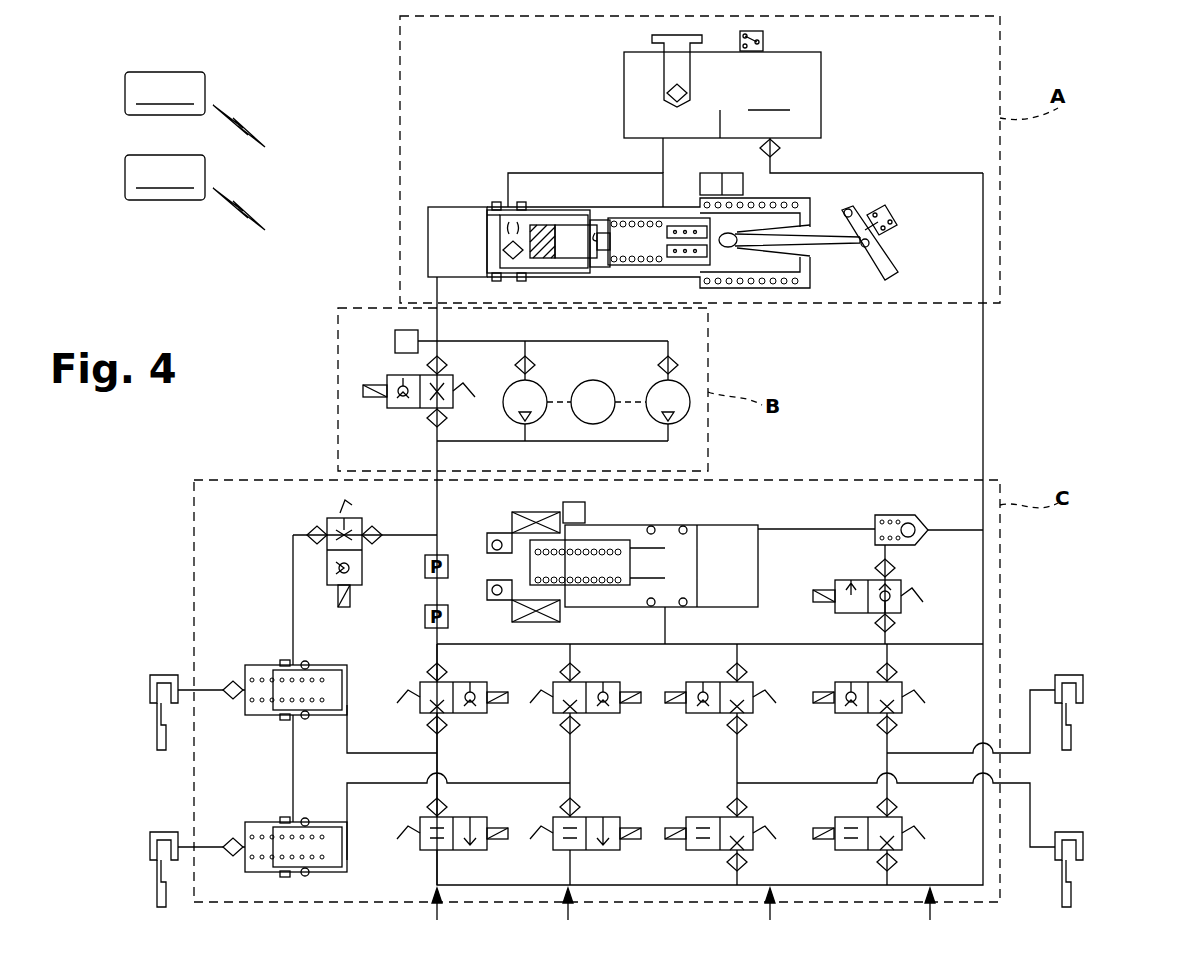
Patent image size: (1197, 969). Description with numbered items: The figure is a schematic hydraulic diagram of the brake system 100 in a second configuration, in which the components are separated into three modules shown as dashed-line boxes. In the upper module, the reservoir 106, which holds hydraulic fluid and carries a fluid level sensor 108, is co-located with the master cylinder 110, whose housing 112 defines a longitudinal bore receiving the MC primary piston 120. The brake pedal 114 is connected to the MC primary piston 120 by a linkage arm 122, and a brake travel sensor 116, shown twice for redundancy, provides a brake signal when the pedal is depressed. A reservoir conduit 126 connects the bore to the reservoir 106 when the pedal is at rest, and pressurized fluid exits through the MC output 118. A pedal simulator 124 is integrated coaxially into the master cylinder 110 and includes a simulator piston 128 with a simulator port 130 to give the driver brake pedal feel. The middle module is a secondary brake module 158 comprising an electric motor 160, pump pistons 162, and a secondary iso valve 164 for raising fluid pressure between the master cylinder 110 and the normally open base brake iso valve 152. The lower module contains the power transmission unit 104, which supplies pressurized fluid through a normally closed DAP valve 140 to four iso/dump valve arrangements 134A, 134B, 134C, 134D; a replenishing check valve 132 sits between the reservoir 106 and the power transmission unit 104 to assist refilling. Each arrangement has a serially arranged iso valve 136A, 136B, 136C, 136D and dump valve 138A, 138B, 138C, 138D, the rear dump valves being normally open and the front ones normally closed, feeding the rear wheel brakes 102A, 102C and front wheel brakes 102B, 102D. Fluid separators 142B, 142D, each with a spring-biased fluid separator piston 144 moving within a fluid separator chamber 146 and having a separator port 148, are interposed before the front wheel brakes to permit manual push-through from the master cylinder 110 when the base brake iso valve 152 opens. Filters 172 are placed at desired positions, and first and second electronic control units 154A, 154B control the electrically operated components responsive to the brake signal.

The brake system 100 is at (1098, 150).
The wheel brake 102A is at (1083, 690).
The wheel brake 102B is at (150, 690).
The wheel brake 102C is at (1083, 847).
The wheel brake 102D is at (150, 847).
The power transmission unit 104 is at (745, 523).
The reservoir 106 is at (722, 86).
The fluid level sensor 108 is at (758, 31).
The master cylinder 110 is at (800, 196).
The housing 112 is at (560, 210).
The brake pedal 114 is at (895, 245).
The brake travel sensor 116 is at (722, 173).
The MC output 118 is at (430, 288).
The MC primary piston 120 is at (718, 240).
The linkage arm 122 is at (832, 256).
The pedal simulator 124 is at (493, 196).
The reservoir conduit 126 is at (598, 172).
The simulator piston 128 is at (553, 256).
The simulator port 130 is at (490, 212).
The replenishing check valve 132 is at (905, 512).
The iso/dump valve arrangement 134A is at (930, 920).
The iso/dump valve arrangement 134B is at (437, 920).
The iso/dump valve arrangement 134C is at (770, 920).
The iso/dump valve arrangement 134D is at (568, 920).
The iso valve 136A is at (897, 680).
The iso valve 136B is at (460, 680).
The iso valve 136C is at (752, 680).
The iso valve 136D is at (605, 680).
The dump valve 138A is at (898, 808).
The dump valve 138B is at (462, 808).
The dump valve 138C is at (752, 808).
The dump valve 138D is at (605, 812).
The DAP valve 140 is at (933, 590).
The fluid separator 142B is at (330, 665).
The fluid separator 142D is at (316, 822).
The fluid separator piston 144 is at (340, 703).
The fluid separator chamber 146 is at (347, 675).
The separator port 148 is at (285, 665).
The base brake iso valve 152 is at (291, 532).
The first electronic control unit 154A is at (195, 109).
The second electronic control unit 154B is at (195, 192).
The secondary brake module 158 is at (698, 430).
The electric motor 160 is at (600, 380).
The pump piston 162 is at (685, 385).
The secondary iso valve 164 is at (452, 372).
The filter 172 is at (675, 356).